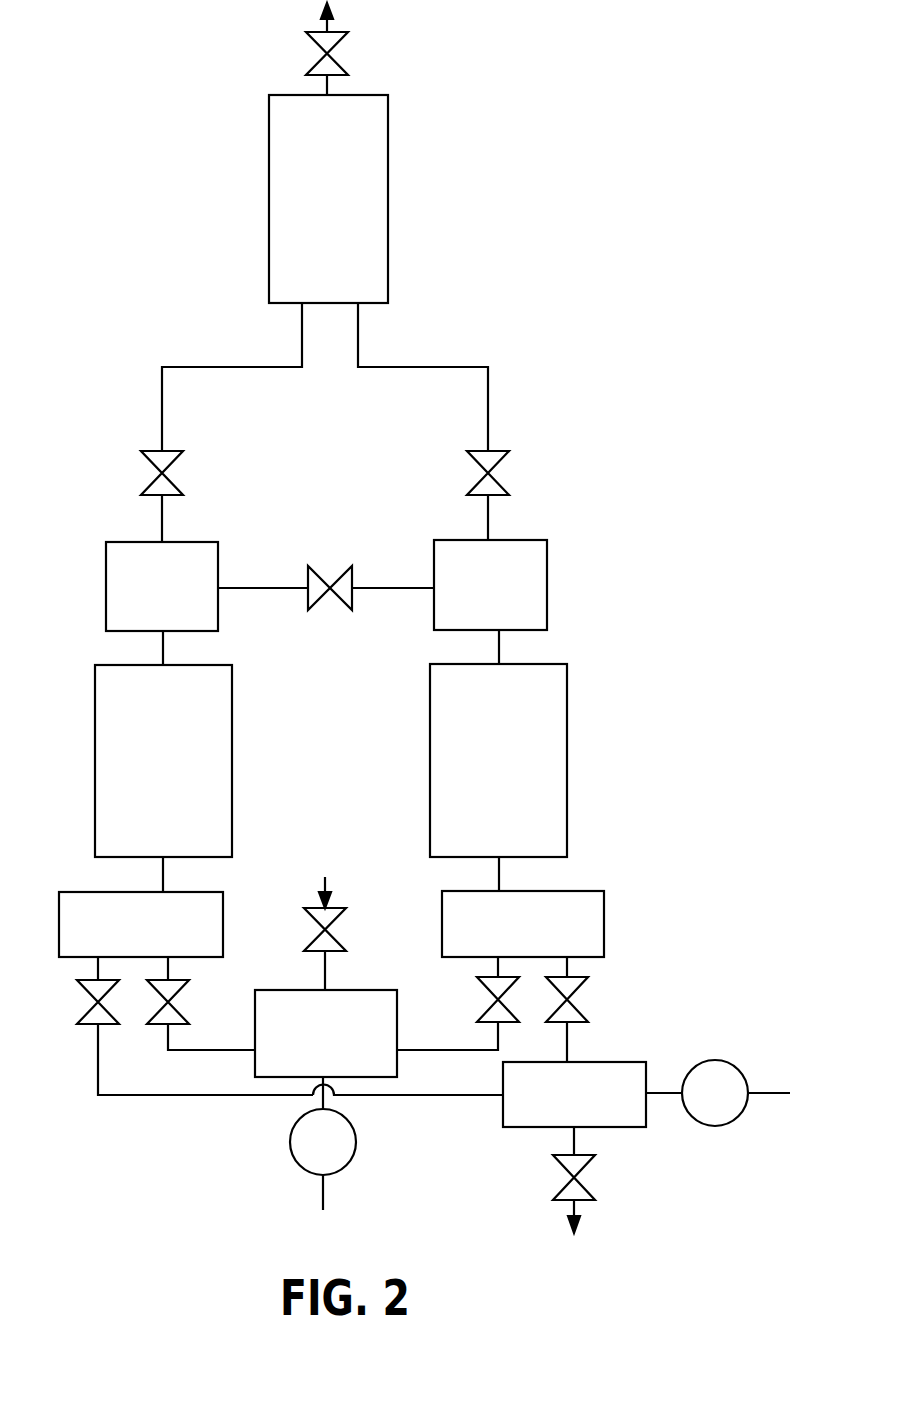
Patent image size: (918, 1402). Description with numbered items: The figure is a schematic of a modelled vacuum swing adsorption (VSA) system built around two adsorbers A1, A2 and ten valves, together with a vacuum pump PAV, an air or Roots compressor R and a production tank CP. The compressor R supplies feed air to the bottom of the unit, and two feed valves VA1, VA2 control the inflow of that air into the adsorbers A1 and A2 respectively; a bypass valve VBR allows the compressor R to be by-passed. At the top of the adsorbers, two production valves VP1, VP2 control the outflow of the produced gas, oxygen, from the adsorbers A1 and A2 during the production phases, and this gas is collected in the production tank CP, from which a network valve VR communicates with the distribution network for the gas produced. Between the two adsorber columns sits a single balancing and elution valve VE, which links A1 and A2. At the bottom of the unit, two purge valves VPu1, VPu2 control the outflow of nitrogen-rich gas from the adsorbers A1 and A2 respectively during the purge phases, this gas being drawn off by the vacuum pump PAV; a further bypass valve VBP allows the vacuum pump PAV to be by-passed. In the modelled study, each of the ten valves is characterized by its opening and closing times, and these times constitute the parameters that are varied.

The network valve VR is at (347, 49).
The production tank CP is at (328, 199).
The first production valve VP1 is at (202, 496).
The second production valve VP2 is at (448, 495).
The balancing and elution valve VE is at (326, 609).
The first adsorber A1 is at (163, 761).
The second adsorber A2 is at (498, 760).
The first feed valve VA1 is at (175, 1026).
The first purge valve VPu1 is at (201, 1003).
The bypass valve VBP is at (347, 933).
The second purge valve VPu2 is at (458, 1003).
The second feed valve VA2 is at (589, 1009).
The air or Roots compressor R is at (718, 1093).
The vacuum pump PAV is at (323, 1143).
The bypass valve VBR is at (545, 1180).